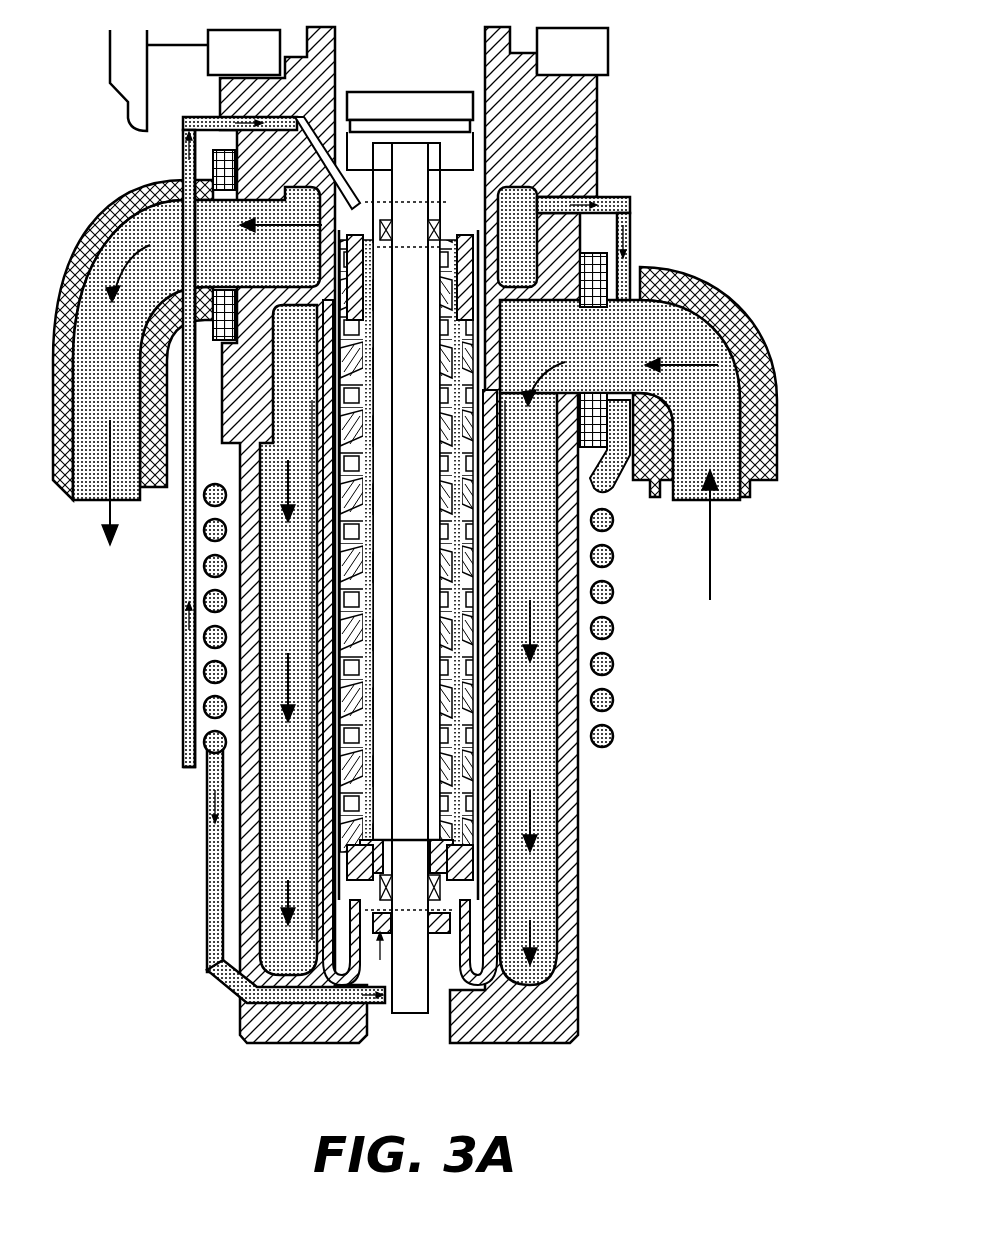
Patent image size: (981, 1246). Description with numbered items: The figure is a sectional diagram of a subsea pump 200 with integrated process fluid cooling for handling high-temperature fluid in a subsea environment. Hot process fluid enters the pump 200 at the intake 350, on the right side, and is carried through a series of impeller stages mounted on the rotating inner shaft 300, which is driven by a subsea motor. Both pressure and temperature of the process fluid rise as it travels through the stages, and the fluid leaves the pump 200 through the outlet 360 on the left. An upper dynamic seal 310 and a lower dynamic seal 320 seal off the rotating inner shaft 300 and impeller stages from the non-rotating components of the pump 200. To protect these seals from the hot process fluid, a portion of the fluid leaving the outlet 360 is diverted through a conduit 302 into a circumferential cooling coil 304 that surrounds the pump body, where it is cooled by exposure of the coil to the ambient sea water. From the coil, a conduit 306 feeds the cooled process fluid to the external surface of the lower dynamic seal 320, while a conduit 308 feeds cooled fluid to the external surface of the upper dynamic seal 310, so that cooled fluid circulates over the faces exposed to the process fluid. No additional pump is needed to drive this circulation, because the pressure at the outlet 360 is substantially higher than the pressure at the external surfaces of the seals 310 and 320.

The pump 200 is at (159, 1025).
The inner shaft 300 is at (407, 750).
The conduit 302 is at (616, 184).
The circumferential cooling coil 304 is at (628, 485).
The conduit 306 is at (203, 870).
The conduit 308 is at (180, 132).
The upper dynamic seal 310 is at (409, 200).
The lower dynamic seal 320 is at (401, 915).
The intake 350 is at (638, 433).
The outlet 360 is at (540, 187).